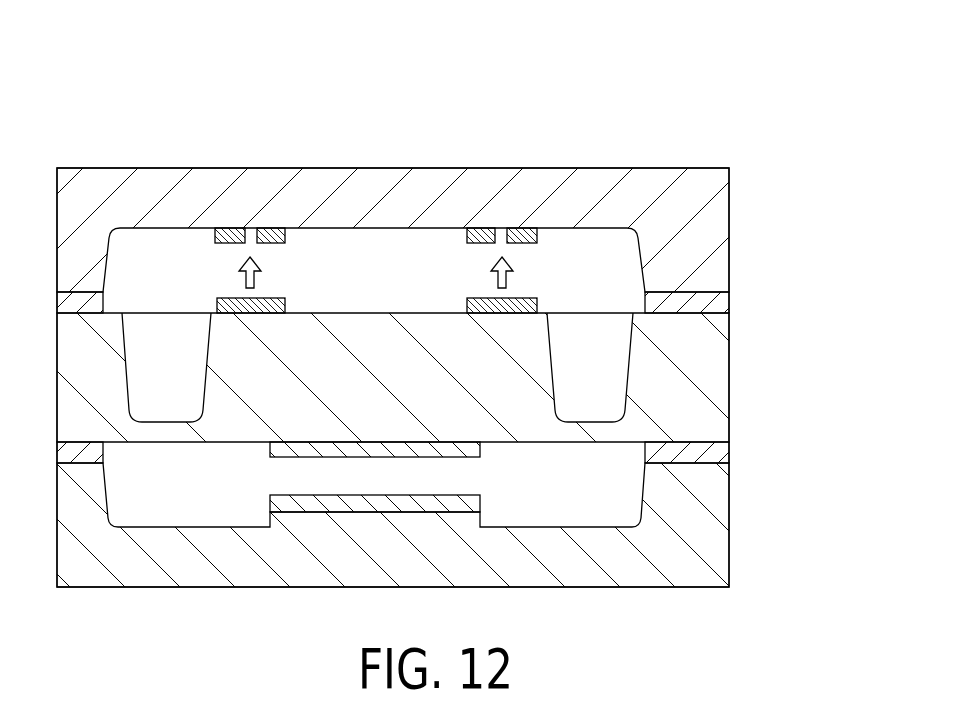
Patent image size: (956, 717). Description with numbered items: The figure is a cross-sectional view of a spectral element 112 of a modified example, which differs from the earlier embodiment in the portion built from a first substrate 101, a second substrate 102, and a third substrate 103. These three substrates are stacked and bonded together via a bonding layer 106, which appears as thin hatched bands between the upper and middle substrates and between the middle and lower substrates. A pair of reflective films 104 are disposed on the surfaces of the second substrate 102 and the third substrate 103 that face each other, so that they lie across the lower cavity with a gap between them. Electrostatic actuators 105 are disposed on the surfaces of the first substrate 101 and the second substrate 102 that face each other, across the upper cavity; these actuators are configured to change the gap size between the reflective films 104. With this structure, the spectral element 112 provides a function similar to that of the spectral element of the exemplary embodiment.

The spectral element 112 is at (722, 92).
The first substrate 101 is at (729, 213).
The second substrate 102 is at (729, 376).
The third substrate 103 is at (729, 552).
The reflective films 104 is at (480, 450).
The electrostatic actuators 105 is at (295, 228).
The bonding layer 106 is at (729, 300).